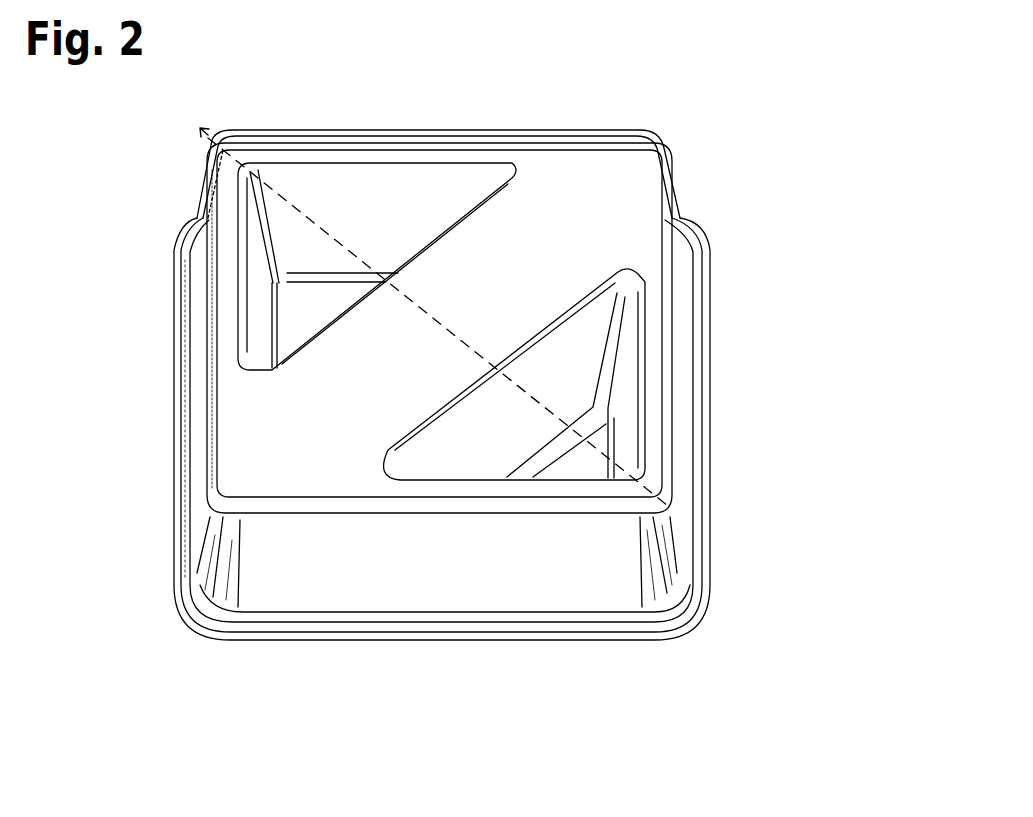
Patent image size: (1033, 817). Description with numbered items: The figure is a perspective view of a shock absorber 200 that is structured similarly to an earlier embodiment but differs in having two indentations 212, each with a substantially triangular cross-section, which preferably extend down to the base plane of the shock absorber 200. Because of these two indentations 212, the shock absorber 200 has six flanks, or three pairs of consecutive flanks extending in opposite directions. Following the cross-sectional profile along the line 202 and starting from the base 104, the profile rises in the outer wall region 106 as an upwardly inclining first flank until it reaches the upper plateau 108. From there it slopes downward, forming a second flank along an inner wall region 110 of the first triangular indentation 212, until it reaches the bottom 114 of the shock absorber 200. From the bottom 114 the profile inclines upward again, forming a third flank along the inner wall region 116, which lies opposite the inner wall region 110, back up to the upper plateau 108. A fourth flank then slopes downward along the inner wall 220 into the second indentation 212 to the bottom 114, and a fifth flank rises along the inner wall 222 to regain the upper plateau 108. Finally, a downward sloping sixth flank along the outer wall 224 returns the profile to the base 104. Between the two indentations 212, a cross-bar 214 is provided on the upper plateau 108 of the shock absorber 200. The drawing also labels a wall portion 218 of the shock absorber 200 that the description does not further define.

The shock absorber 200 is at (725, 197).
The line 202 is at (187, 117).
The base 104 is at (660, 635).
The outer wall region 106 is at (680, 503).
The upper plateau 108 is at (438, 174).
The inner wall region 110 is at (623, 367).
The bottom 114 is at (308, 318).
The inner wall region 116 is at (552, 390).
The indentation 212 is at (365, 188).
The cross-bar 214 is at (470, 333).
The cavity rim wall 218 is at (212, 437).
The inner wall 220 is at (405, 265).
The inner wall 222 is at (257, 277).
The outer wall 224 is at (197, 318).